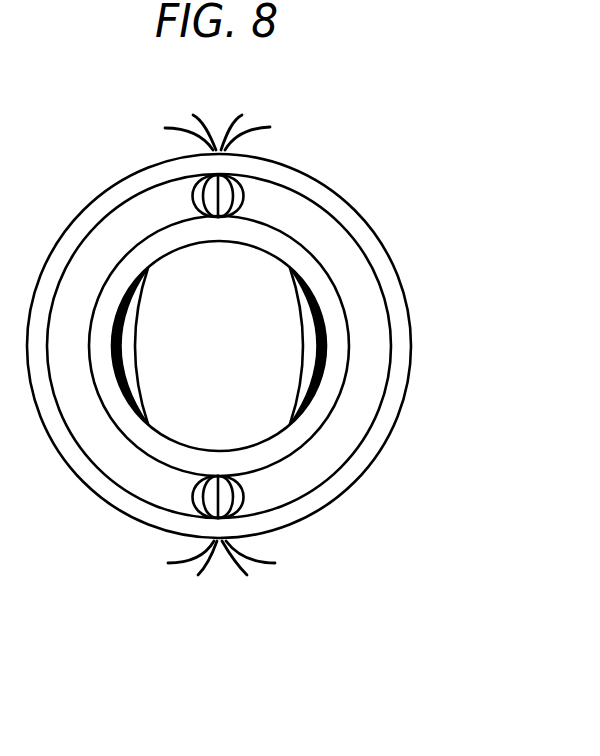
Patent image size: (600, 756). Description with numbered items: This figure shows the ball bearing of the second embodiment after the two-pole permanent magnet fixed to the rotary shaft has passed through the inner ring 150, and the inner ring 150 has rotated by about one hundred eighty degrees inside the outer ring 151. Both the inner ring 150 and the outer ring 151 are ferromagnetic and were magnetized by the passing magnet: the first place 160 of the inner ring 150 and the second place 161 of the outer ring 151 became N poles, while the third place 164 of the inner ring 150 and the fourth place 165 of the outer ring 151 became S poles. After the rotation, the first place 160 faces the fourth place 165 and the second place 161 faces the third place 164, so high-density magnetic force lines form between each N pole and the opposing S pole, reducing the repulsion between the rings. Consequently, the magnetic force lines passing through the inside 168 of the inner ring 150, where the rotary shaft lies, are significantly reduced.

The inner ring 150 is at (333, 370).
The outer ring 151 is at (380, 428).
The first place 160 is at (237, 466).
The second place 161 is at (233, 163).
The third place 164 is at (245, 232).
The fourth place 165 is at (240, 528).
The inside of the inner circumferential surface of the inner ring 168 is at (250, 323).